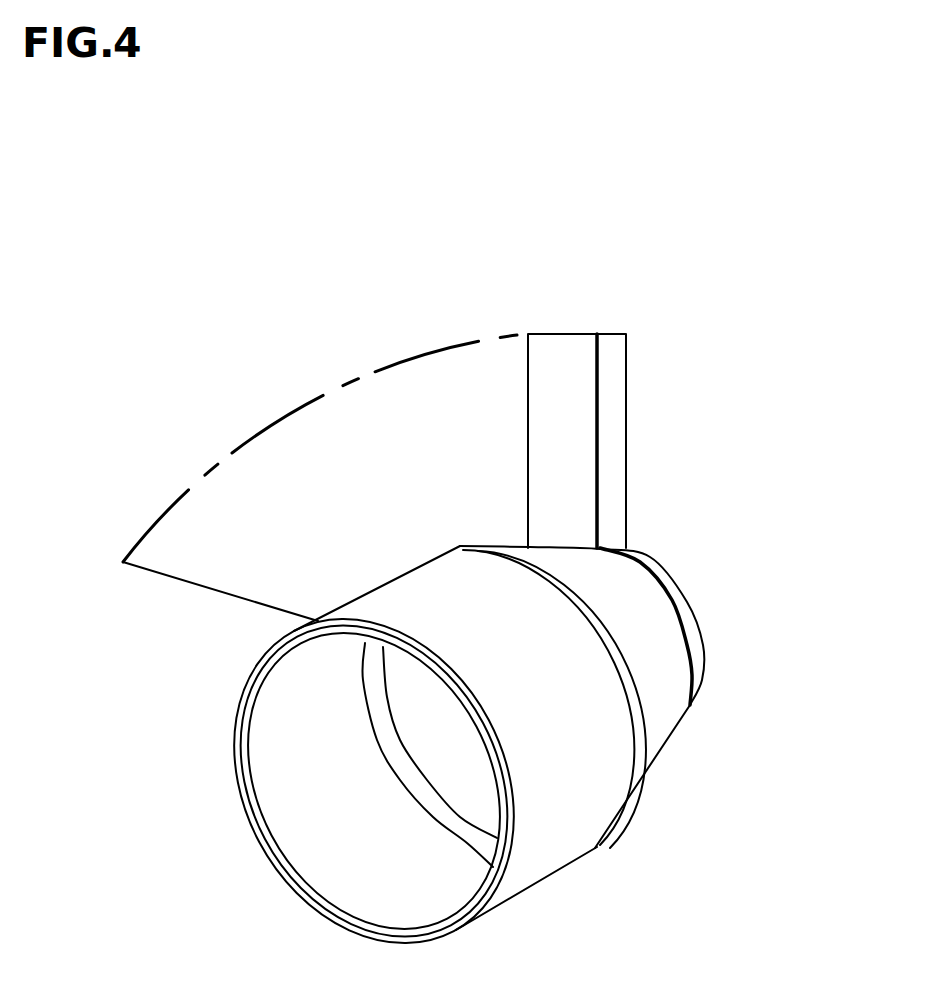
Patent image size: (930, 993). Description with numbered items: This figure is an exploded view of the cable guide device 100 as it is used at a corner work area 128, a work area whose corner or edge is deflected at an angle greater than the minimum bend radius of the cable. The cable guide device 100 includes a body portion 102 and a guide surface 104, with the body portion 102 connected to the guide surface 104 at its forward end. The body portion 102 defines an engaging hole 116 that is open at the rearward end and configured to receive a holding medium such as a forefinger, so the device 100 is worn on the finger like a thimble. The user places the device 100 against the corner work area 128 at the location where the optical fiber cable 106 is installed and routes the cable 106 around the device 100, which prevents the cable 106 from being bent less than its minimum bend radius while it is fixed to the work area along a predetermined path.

The cable guide device 100 is at (697, 597).
The body portion 102 is at (553, 833).
The guide surface 104 is at (665, 700).
The optical fiber cable 106 is at (693, 652).
The engaging hole 116 is at (357, 818).
The corner work area 128 is at (555, 468).